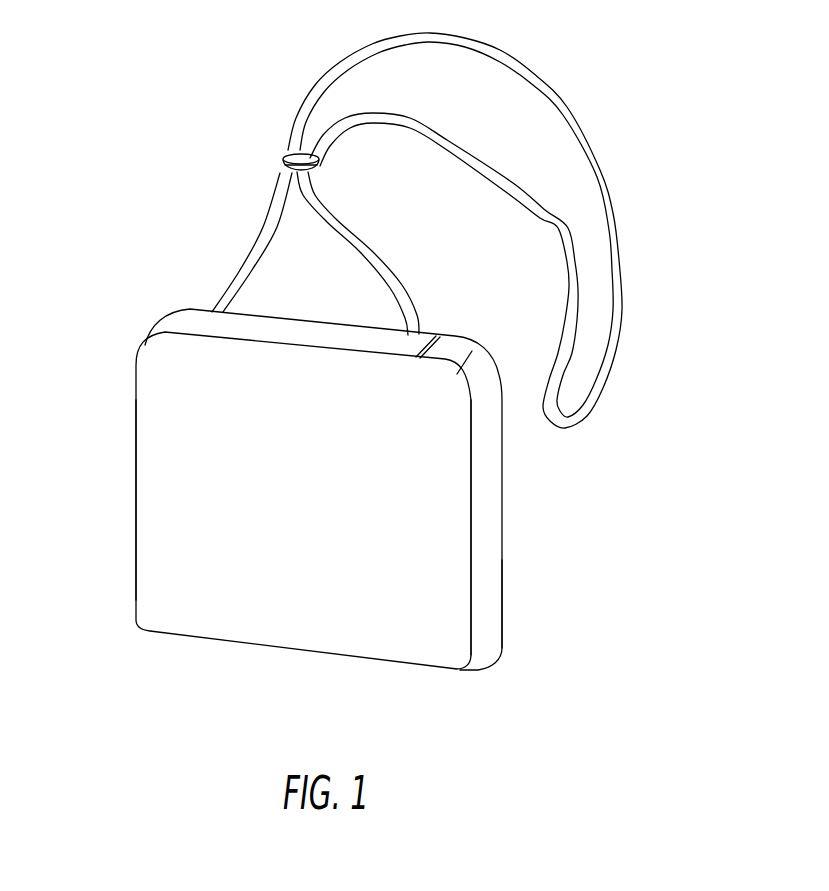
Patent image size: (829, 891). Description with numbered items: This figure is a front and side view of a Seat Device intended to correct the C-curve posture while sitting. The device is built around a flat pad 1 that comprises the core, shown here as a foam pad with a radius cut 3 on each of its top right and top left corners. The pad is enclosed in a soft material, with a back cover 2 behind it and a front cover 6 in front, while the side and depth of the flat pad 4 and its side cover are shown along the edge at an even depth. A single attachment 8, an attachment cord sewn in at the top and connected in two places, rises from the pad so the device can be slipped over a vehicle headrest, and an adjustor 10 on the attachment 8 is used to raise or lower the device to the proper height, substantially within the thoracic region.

The flat pad 1 is at (168, 414).
The back cover 2 is at (503, 530).
The radius cut 3 is at (447, 350).
The side and depth of the flat pad 4 is at (487, 629).
The front cover 6 is at (168, 572).
The attachment 8 is at (252, 245).
The adjustor 10 is at (283, 163).